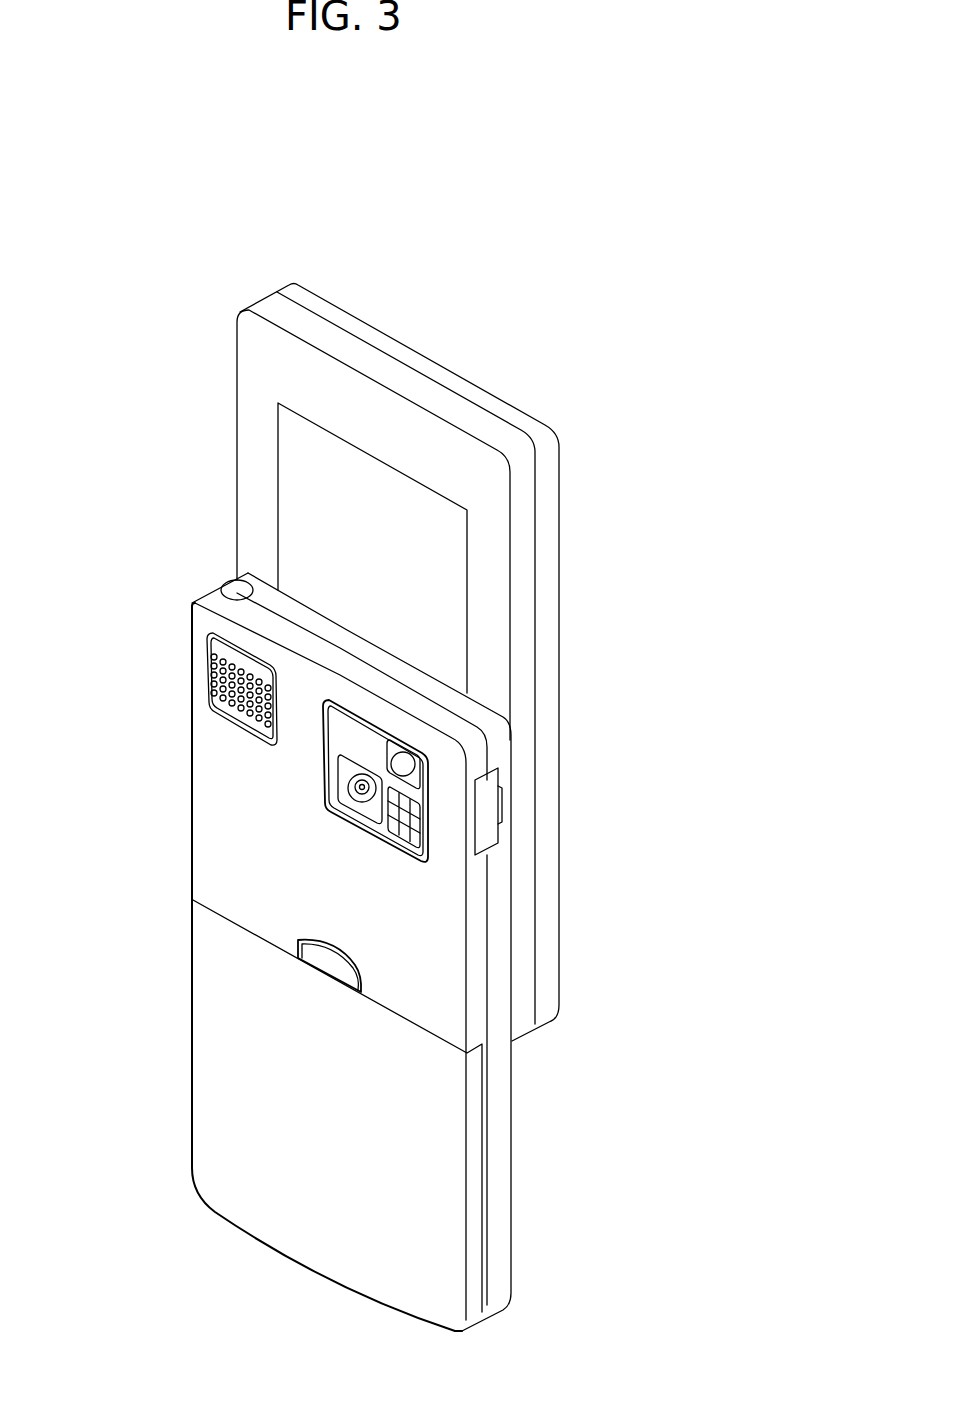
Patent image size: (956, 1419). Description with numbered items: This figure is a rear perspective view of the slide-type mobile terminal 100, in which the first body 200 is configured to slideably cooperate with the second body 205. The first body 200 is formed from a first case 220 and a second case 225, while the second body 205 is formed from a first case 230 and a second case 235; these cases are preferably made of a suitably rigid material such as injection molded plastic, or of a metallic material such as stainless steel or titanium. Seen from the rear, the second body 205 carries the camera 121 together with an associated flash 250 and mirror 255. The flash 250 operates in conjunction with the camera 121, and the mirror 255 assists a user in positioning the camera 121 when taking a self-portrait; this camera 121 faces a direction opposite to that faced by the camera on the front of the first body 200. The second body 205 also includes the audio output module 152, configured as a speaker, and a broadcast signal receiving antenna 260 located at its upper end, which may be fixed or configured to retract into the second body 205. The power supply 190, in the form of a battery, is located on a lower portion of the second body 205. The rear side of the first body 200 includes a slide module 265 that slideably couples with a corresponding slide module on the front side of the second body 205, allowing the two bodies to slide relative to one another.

The mobile terminal 100 is at (531, 320).
The first body 200 is at (200, 445).
The second body 205 is at (170, 799).
The first case 220 is at (283, 297).
The second case 225 is at (265, 311).
The slide module 265 is at (284, 527).
The broadcast signal receiving antenna 260 is at (223, 589).
The audio output module 152 is at (221, 679).
The flash 250 is at (423, 858).
The mirror 255 is at (406, 765).
The camera 121 is at (362, 792).
The power supply 190 is at (212, 1000).
The second case 235 is at (477, 1006).
The first case 230 is at (503, 1073).